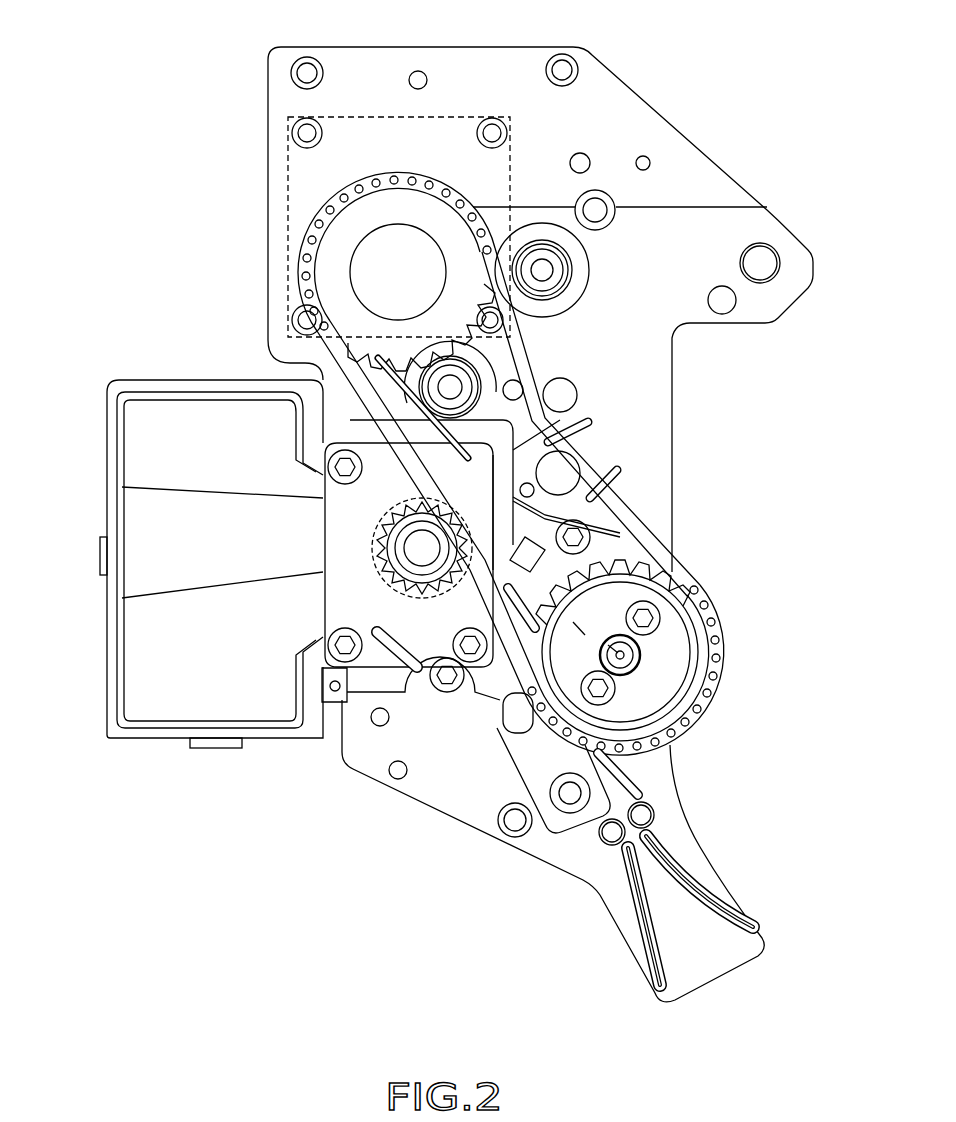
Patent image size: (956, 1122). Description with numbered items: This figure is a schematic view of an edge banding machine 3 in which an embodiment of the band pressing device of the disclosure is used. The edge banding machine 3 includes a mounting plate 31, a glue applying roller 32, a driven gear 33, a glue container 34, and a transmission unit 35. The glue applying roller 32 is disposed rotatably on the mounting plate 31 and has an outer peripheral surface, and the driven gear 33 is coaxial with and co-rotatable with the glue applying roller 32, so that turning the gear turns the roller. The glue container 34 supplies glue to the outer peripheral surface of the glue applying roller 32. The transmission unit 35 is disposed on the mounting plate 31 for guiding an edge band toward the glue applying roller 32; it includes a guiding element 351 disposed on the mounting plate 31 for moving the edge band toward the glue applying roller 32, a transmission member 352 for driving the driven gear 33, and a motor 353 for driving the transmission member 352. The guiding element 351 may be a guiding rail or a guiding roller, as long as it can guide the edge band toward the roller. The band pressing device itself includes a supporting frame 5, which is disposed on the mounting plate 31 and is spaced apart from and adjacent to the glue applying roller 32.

The edge banding machine 3 is at (230, 240).
The supporting frame 5 is at (622, 533).
The mounting plate 31 is at (700, 147).
The glue applying roller 32 is at (372, 548).
The driven gear 33 is at (390, 580).
The glue container 34 is at (151, 745).
The transmission unit 35 is at (718, 622).
The guiding element 351 is at (603, 842).
The transmission member 352 is at (440, 458).
The motor 353 is at (363, 117).